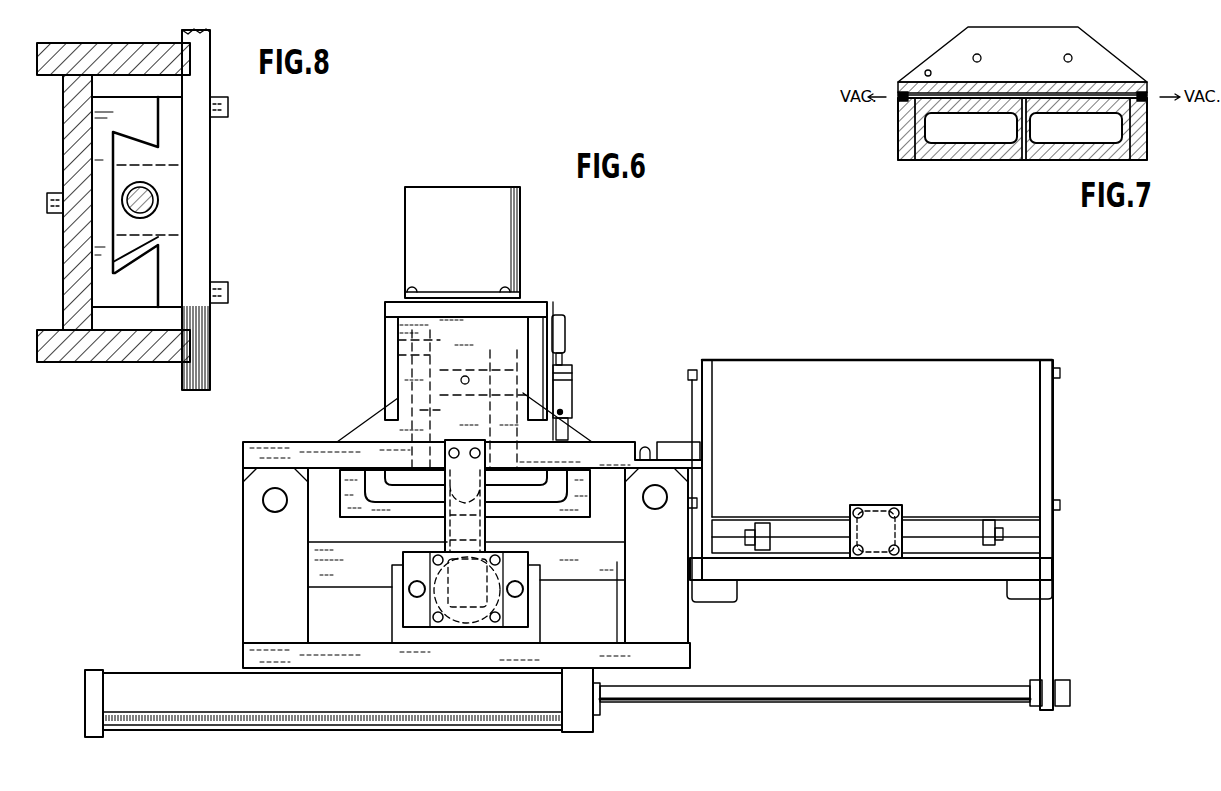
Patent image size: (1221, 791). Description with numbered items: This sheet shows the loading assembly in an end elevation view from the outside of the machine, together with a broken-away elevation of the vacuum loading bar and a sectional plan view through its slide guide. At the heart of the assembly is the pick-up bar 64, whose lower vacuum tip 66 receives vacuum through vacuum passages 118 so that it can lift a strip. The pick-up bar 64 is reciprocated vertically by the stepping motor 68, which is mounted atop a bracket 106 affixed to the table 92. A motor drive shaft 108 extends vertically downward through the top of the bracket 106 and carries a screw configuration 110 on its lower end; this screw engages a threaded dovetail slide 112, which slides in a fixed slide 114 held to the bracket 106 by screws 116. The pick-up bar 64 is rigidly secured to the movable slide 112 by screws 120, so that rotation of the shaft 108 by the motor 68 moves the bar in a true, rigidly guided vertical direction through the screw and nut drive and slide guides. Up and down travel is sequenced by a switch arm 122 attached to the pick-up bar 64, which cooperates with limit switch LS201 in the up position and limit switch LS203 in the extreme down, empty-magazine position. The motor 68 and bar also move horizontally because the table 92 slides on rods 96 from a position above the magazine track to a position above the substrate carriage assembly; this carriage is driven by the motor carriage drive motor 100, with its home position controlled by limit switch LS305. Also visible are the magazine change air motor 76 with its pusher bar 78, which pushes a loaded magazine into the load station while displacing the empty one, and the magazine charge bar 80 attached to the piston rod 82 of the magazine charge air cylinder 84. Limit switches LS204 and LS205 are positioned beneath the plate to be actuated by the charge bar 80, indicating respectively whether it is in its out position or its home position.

In FIG. 7, the pick-up bar 64 is at (1147, 82).
In FIG. 6, the pick-up bar 64 is at (590, 478).
In FIG. 7, the vacuum tip 66 is at (1022, 161).
In FIG. 6, the stepping motor 68 is at (520, 232).
In FIG. 6, the magazine change air motor 76 is at (876, 560).
In FIG. 6, the pusher bar 78 is at (950, 540).
In FIG. 6, the magazine charge bar 80 is at (1040, 638).
In FIG. 6, the piston rod 82 is at (800, 703).
In FIG. 6, the magazine charge air cylinder 84 is at (490, 708).
In FIG. 6, the table 92 is at (620, 442).
In FIG. 6, the rods 96 is at (263, 500).
In FIG. 6, the motor carriage drive motor 100 is at (458, 597).
In FIG. 8, the bracket 106 is at (66, 312).
In FIG. 8, the motor drive shaft 108 is at (148, 196).
In FIG. 8, the screw configuration 110 is at (163, 202).
In FIG. 8, the threaded dovetail slide 112 is at (172, 213).
In FIG. 8, the fixed slide 114 is at (102, 157).
In FIG. 8, the screws 116 is at (47, 205).
In FIG. 7, the vacuum passages 118 is at (1148, 93).
In FIG. 8, the screws 120 is at (228, 292).
In FIG. 6, the switch arm 122 is at (572, 384).
In FIG. 6, the limit switch LS201 is at (558, 345).
In FIG. 6, the limit switch LS203 is at (564, 437).
In FIG. 6, the limit switch LS204 is at (753, 612).
In FIG. 6, the limit switch LS205 is at (1007, 592).
In FIG. 6, the limit switch LS305 is at (690, 442).